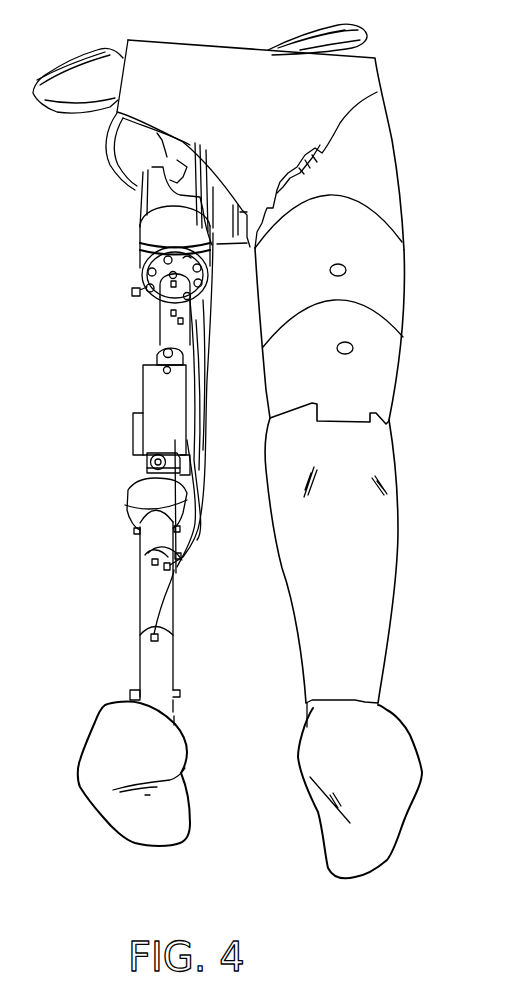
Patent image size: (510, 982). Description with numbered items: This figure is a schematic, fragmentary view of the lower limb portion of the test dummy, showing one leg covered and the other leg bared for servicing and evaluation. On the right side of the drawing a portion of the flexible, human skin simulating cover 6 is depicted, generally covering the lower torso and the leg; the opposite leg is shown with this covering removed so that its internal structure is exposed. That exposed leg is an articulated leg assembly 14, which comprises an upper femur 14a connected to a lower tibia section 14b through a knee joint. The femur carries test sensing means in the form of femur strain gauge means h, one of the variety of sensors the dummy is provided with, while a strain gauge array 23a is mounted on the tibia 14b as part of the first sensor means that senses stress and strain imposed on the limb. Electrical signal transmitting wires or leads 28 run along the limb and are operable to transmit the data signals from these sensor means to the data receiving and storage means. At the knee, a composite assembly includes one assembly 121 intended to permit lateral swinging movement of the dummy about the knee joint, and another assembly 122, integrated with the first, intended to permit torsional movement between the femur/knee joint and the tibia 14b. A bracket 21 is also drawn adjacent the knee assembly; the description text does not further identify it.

The human skin simulating cover 6 is at (407, 258).
The left leg assembly 14 is at (410, 455).
The upper femur 14a is at (158, 322).
The lower tibia section 14b is at (140, 620).
The femur strain gauge means h is at (162, 337).
The knee bracket 21 is at (190, 472).
The strain gauge array 23a is at (168, 553).
The leads 28 is at (80, 60).
The lateral swinging assembly 121 is at (150, 460).
The torsional movement assembly 122 is at (138, 490).